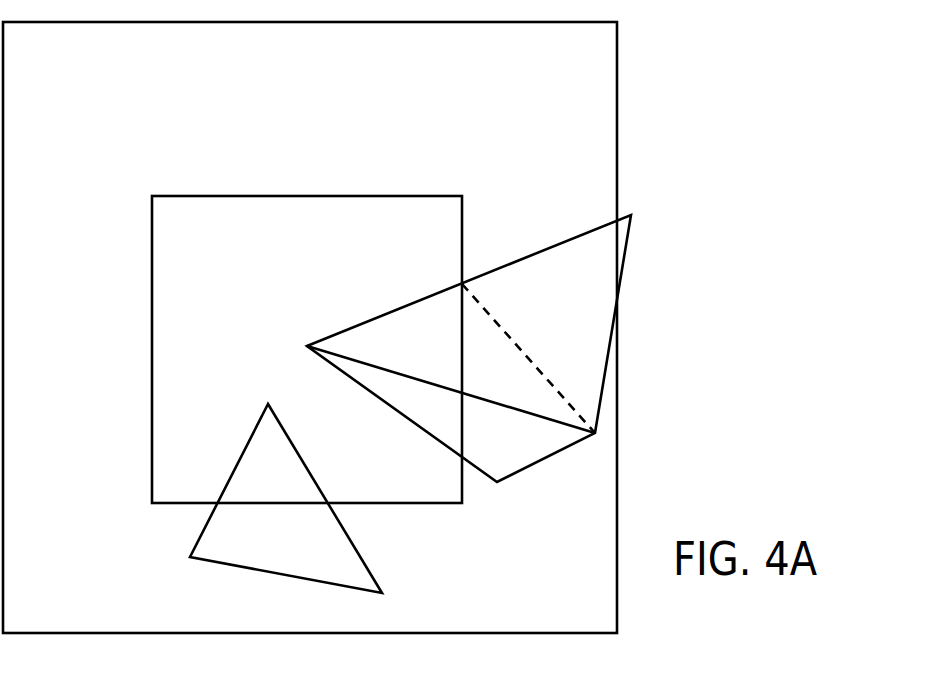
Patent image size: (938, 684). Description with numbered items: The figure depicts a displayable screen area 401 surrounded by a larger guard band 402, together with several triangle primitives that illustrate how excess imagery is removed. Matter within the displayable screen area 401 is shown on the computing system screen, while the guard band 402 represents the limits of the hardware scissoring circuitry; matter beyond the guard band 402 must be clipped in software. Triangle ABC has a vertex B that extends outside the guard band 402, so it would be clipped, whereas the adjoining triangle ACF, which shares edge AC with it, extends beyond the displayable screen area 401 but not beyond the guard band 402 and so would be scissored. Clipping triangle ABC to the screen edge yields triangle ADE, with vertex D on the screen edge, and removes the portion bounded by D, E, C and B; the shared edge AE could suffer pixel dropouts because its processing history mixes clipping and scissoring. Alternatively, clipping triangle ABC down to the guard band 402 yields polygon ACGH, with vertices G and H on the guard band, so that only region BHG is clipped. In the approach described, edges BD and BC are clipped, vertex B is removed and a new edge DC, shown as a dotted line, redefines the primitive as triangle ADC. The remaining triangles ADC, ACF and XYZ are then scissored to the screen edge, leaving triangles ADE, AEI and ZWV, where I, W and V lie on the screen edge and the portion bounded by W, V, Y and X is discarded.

The displayable screen area 401 is at (240, 267).
The guard band 402 is at (112, 101).
The vertex A is at (303, 333).
The vertex B is at (633, 195).
The vertex C is at (602, 446).
The vertex D is at (475, 240).
The vertex E is at (474, 378).
The vertex F is at (503, 500).
The vertex G is at (591, 323).
The vertex H is at (590, 258).
The vertex I is at (436, 463).
The vertex Z is at (287, 388).
The vertex W is at (207, 480).
The vertex V is at (334, 480).
The vertex Y is at (168, 556).
The vertex X is at (397, 591).